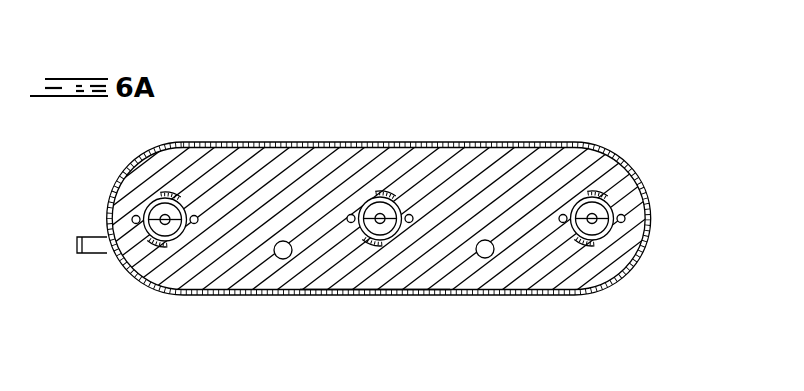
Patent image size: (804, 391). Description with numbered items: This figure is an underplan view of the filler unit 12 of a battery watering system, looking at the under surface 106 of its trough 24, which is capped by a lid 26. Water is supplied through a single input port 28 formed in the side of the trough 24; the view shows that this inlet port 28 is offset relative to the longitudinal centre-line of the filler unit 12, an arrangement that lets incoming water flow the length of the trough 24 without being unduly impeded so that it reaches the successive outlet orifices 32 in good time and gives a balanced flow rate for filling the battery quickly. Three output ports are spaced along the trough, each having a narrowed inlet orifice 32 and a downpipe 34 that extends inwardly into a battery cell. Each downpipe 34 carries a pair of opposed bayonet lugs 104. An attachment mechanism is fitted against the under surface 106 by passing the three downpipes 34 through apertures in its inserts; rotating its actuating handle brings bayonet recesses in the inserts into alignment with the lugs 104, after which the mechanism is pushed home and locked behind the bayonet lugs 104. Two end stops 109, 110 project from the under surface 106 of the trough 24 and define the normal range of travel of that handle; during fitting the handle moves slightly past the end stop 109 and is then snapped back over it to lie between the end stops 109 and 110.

The filler unit 12 is at (420, 127).
The trough 24 is at (488, 141).
The lid 26 is at (617, 253).
The input port 28 is at (88, 236).
The inlet orifice 32 is at (168, 224).
The downpipe 34 is at (186, 234).
The bayonet lug 104 is at (171, 194).
The under surface 106 is at (254, 183).
The end stop 109 is at (286, 259).
The end stop 110 is at (489, 259).